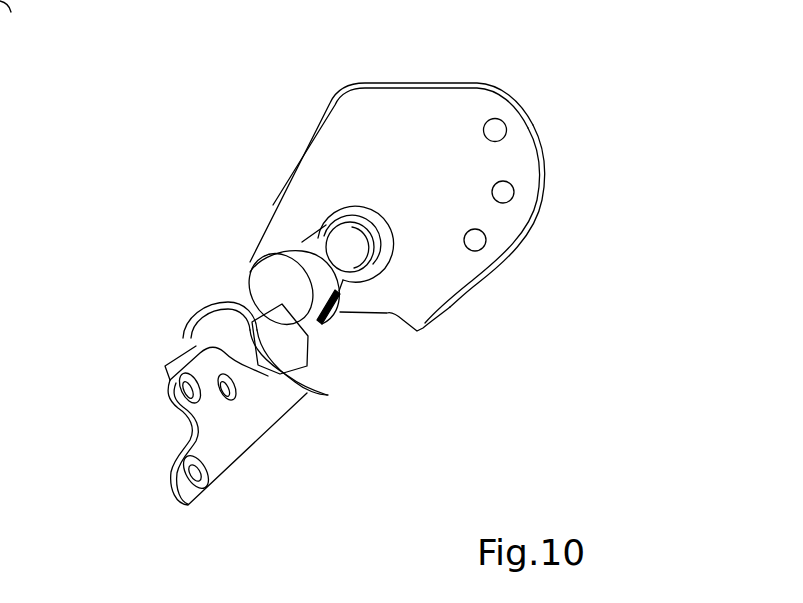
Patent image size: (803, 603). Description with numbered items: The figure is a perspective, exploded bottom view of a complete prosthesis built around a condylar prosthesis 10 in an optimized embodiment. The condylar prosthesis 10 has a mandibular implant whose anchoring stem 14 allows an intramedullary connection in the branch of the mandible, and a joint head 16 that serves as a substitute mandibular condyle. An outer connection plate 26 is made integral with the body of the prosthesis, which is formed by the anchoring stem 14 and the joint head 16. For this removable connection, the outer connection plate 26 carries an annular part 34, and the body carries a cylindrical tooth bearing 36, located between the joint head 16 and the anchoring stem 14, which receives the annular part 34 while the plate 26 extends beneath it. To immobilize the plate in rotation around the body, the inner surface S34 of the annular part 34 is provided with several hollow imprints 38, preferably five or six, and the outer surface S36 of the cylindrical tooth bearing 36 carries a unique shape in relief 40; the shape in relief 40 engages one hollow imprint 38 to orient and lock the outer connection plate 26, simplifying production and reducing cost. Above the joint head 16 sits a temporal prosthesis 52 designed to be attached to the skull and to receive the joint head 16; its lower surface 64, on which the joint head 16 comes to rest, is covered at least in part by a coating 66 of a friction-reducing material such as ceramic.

The condylar prosthesis 10 is at (217, 360).
The anchoring stem 14 is at (200, 406).
The joint head 16 is at (413, 250).
The outer connection plate 26 is at (253, 464).
The annular part 34 is at (194, 282).
The inner surface of the annular part S34 is at (192, 322).
The cylindrical tooth bearing 36 is at (241, 241).
The outer surface of the cylindrical tooth bearing S36 is at (302, 258).
The hollow imprint 38 is at (328, 395).
The shape in relief 40 is at (338, 313).
The temporal prosthesis 52 is at (495, 70).
The lower surface of the temporal prosthesis 64 is at (546, 196).
The coating 66 is at (354, 131).